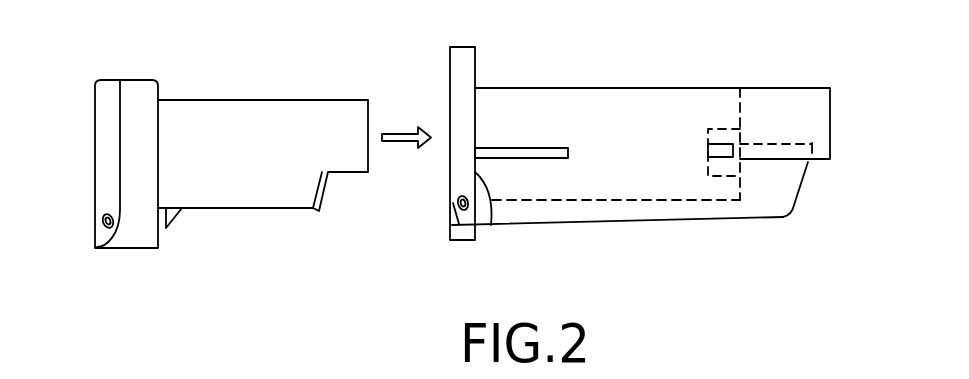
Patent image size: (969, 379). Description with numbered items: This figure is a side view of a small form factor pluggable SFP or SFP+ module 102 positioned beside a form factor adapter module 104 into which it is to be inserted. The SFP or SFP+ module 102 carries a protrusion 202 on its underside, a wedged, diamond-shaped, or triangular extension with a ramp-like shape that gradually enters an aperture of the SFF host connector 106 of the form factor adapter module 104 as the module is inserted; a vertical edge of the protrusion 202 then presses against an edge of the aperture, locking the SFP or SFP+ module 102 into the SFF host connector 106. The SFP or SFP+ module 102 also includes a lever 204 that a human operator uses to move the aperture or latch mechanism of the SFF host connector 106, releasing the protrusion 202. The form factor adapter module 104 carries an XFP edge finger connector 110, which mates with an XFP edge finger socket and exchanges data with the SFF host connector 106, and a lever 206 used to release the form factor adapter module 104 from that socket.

The SFP or SFP+ module 102 is at (209, 148).
The form factor adapter module 104 is at (642, 140).
The SFF host connector 106 is at (618, 163).
The XFP edge finger connector 110 is at (808, 165).
The protrusion 202 is at (172, 220).
The lever 204 is at (95, 117).
The lever 206 is at (450, 92).